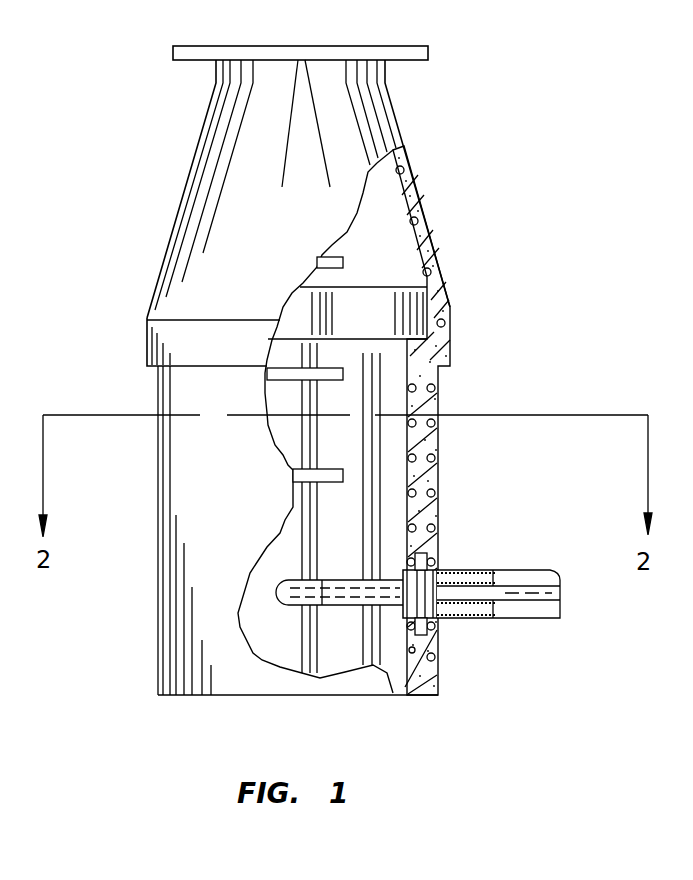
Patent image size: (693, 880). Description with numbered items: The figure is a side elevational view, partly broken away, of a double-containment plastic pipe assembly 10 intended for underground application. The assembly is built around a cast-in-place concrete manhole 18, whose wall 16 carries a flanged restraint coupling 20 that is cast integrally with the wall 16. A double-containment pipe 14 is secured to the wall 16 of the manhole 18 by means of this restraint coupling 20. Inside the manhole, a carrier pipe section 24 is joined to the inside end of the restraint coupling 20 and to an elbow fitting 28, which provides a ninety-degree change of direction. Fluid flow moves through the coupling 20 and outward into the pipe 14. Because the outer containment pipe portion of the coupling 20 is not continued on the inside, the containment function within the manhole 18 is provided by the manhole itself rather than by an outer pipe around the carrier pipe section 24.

The double-containment plastic pipe assembly 10 is at (460, 547).
The double-containment pipe 14 is at (540, 592).
The wall 16 is at (438, 395).
The cast-in-place concrete manhole 18 is at (472, 290).
The flanged restraint coupling 20 is at (443, 617).
The carrier pipe section 24 is at (378, 590).
The elbow fitting 28 is at (251, 624).